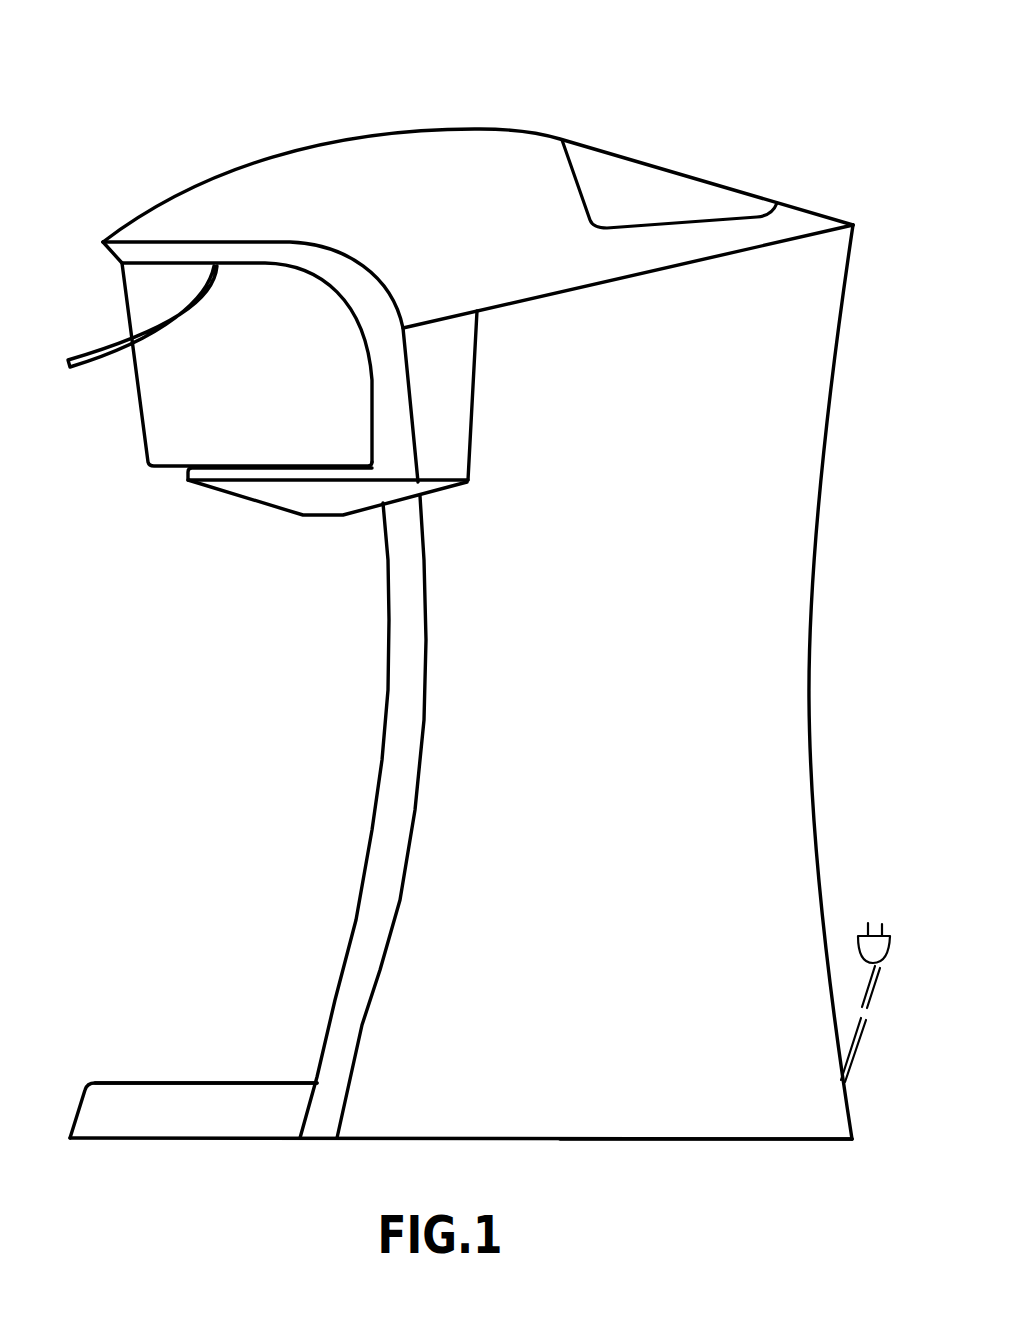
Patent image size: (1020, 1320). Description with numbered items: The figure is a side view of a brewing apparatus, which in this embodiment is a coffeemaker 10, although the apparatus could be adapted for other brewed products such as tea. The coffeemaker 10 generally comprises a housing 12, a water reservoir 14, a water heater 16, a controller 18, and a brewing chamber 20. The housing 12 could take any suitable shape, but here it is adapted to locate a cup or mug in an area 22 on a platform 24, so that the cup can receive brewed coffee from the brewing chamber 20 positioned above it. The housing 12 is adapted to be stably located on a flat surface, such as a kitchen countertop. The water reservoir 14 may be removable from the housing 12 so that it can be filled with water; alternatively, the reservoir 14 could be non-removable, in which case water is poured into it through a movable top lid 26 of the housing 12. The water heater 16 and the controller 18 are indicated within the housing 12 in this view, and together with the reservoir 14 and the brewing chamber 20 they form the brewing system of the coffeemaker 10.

The coffeemaker 10 is at (140, 110).
The housing 12 is at (563, 1128).
The water reservoir 14 is at (769, 363).
The water heater 16 is at (748, 609).
The controller 18 is at (720, 1107).
The brewing chamber 20 is at (138, 400).
The area 22 is at (146, 1053).
The platform 24 is at (78, 1100).
The movable top lid 26 is at (688, 180).